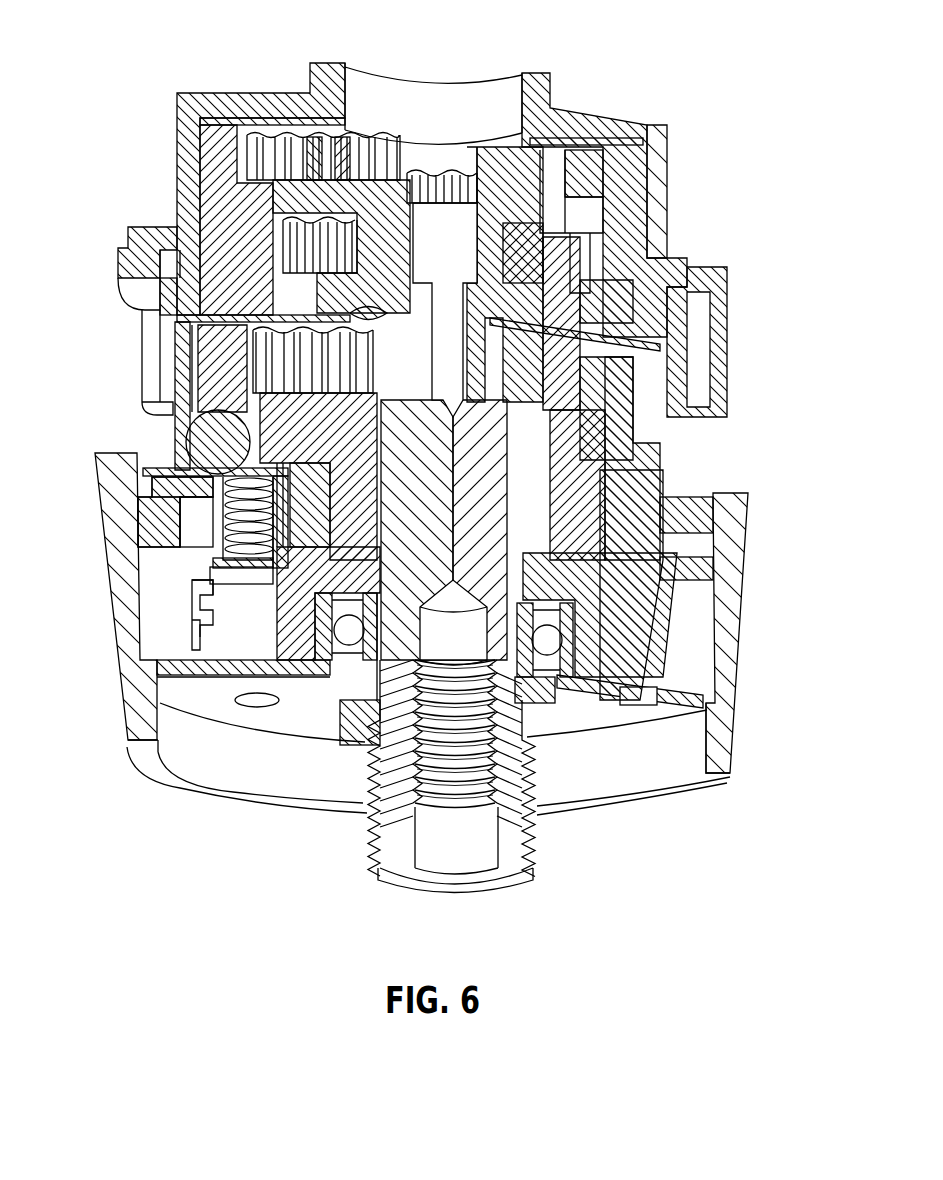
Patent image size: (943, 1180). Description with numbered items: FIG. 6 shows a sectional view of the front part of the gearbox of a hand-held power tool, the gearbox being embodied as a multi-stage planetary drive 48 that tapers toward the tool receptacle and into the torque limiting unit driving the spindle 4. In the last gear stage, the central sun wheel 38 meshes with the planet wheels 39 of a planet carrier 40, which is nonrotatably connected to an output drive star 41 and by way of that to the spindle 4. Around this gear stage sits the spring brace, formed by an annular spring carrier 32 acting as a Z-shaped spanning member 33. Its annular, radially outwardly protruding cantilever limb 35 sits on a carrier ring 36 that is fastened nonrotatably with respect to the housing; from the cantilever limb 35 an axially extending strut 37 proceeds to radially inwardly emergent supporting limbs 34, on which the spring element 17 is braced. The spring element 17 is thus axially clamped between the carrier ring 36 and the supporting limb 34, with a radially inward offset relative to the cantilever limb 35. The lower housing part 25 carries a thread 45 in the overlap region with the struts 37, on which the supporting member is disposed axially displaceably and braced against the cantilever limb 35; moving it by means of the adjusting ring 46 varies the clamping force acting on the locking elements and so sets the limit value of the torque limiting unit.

The spindle 4 is at (423, 516).
The spring element 17 is at (225, 537).
The housing part 25 is at (722, 335).
The annular spring carrier 32 is at (242, 575).
The spanning member 33 is at (215, 550).
The supporting limbs 34 is at (195, 592).
The cantilever limb 35 is at (175, 487).
The carrier ring 36 is at (172, 472).
The strut 37 is at (210, 515).
The sun wheel 38 is at (412, 305).
The planet wheels 39 is at (285, 362).
The planet carrier 40 is at (290, 407).
The output drive star 41 is at (560, 490).
The thread 45 is at (200, 628).
The adjusting ring 46 is at (730, 605).
The planetary drive 48 is at (450, 115).